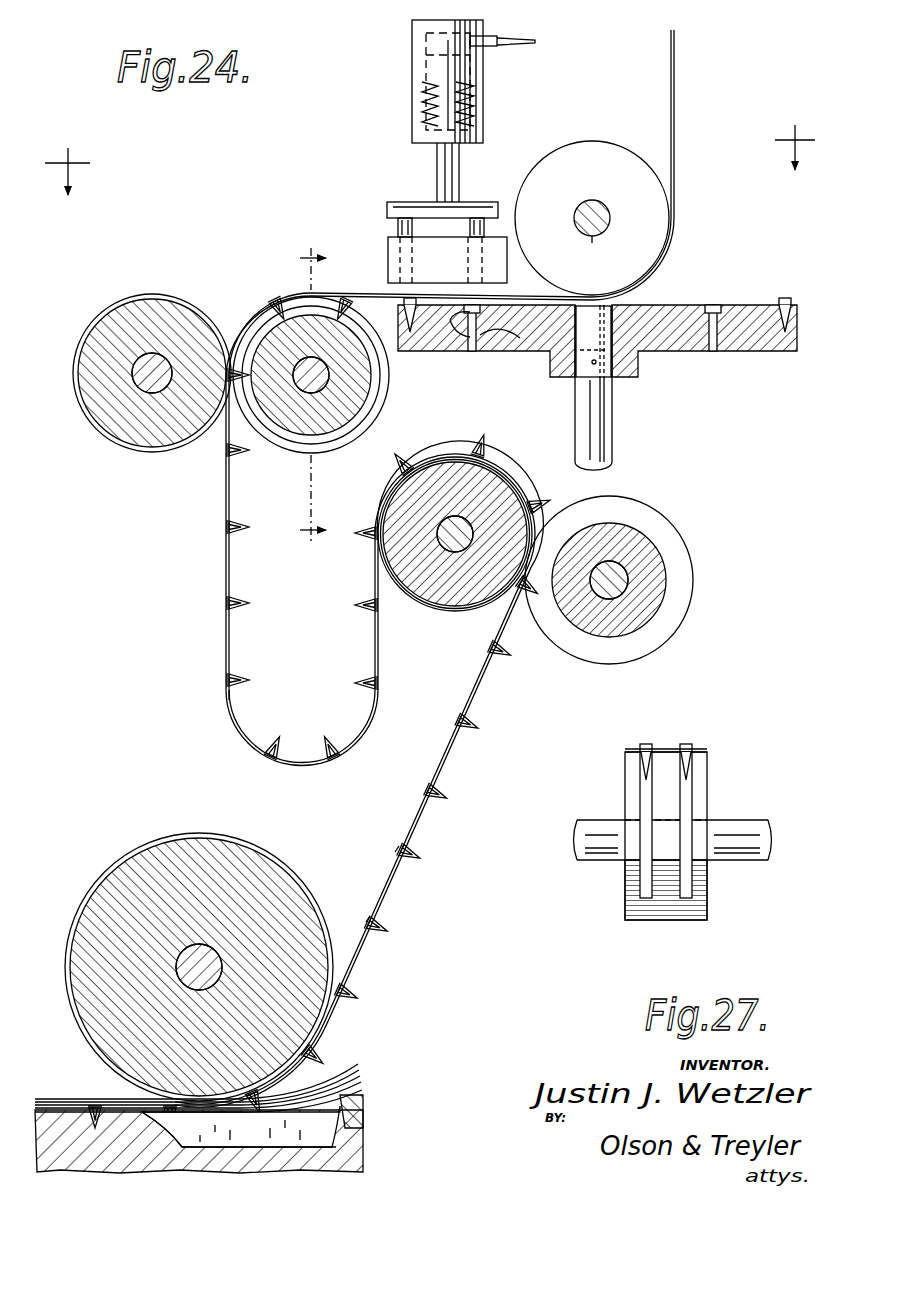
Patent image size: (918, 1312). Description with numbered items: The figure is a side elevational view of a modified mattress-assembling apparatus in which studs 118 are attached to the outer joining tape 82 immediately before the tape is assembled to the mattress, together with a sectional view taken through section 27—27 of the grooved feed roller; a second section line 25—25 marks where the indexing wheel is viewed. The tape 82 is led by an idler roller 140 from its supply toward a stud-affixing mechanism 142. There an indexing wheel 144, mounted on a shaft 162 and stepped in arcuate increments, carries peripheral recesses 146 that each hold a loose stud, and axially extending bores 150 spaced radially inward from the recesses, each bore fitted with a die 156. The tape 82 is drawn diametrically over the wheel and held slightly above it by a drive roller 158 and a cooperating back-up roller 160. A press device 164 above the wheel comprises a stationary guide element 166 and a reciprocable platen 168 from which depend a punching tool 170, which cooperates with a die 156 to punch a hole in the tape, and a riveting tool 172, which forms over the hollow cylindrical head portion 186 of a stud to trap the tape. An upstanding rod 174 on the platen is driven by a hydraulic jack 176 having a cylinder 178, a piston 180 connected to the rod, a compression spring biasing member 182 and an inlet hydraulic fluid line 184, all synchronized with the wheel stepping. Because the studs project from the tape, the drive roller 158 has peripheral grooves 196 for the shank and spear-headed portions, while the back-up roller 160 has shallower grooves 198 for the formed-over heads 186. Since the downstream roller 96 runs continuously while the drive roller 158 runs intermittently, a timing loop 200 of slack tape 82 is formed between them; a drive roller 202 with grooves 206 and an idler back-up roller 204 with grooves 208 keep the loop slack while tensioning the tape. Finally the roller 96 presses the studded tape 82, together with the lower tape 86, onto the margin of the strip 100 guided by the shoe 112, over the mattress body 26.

In FIG. 24, the section 25— 25 is at (430, 148).
In FIG. 24, the section 27— 27 is at (298, 394).
In FIG. 24, the mattress body 26 is at (358, 1160).
In FIG. 24, the tape 82 is at (462, 758).
In FIG. 27, the tape 82 is at (708, 752).
In FIG. 24, the tape 86 is at (362, 1080).
In FIG. 24, the roller 96 is at (132, 882).
In FIG. 24, the strip 100 is at (350, 1068).
In FIG. 24, the guide or shoe 112 is at (362, 1108).
In FIG. 24, the studs 118 is at (420, 863).
In FIG. 24, the idler roller 140 is at (605, 160).
In FIG. 24, the stud-affixing mechanism 142 is at (386, 198).
In FIG. 24, the indexing wheel 144 is at (692, 342).
In FIG. 24, the recesses 146 is at (410, 340).
In FIG. 24, the bores 150 is at (522, 345).
In FIG. 24, the die 156 is at (456, 328).
In FIG. 24, the drive roller 158 is at (292, 448).
In FIG. 27, the drive roller 158 is at (711, 810).
In FIG. 24, the back-up roller 160 is at (125, 445).
In FIG. 24, the shaft 162 is at (612, 460).
In FIG. 24, the press device 164 is at (392, 258).
In FIG. 24, the stationary guide element 166 is at (500, 252).
In FIG. 24, the reciprocable platen 168 is at (470, 205).
In FIG. 24, the punching tool 170 is at (486, 228).
In FIG. 24, the riveting tool 172 is at (388, 212).
In FIG. 24, the rod 174 is at (447, 168).
In FIG. 24, the hydraulic jack 176 is at (412, 58).
In FIG. 24, the cylinder 178 is at (426, 86).
In FIG. 24, the piston 180 is at (470, 68).
In FIG. 24, the compression spring biasing member 182 is at (470, 101).
In FIG. 24, the inlet hydraulic fluid line 184 is at (500, 37).
In FIG. 27, the hollow cylindrical head portion 186 is at (684, 750).
In FIG. 24, the peripheral grooves 196 is at (345, 425).
In FIG. 27, the peripheral grooves 196 is at (686, 900).
In FIG. 24, the grooves 198 is at (140, 305).
In FIG. 24, the timing loop 200 is at (222, 712).
In FIG. 24, the drive roller 202 is at (440, 625).
In FIG. 24, the back-up roller 204 is at (662, 548).
In FIG. 24, the grooves 206 is at (470, 605).
In FIG. 24, the grooves 208 is at (655, 598).